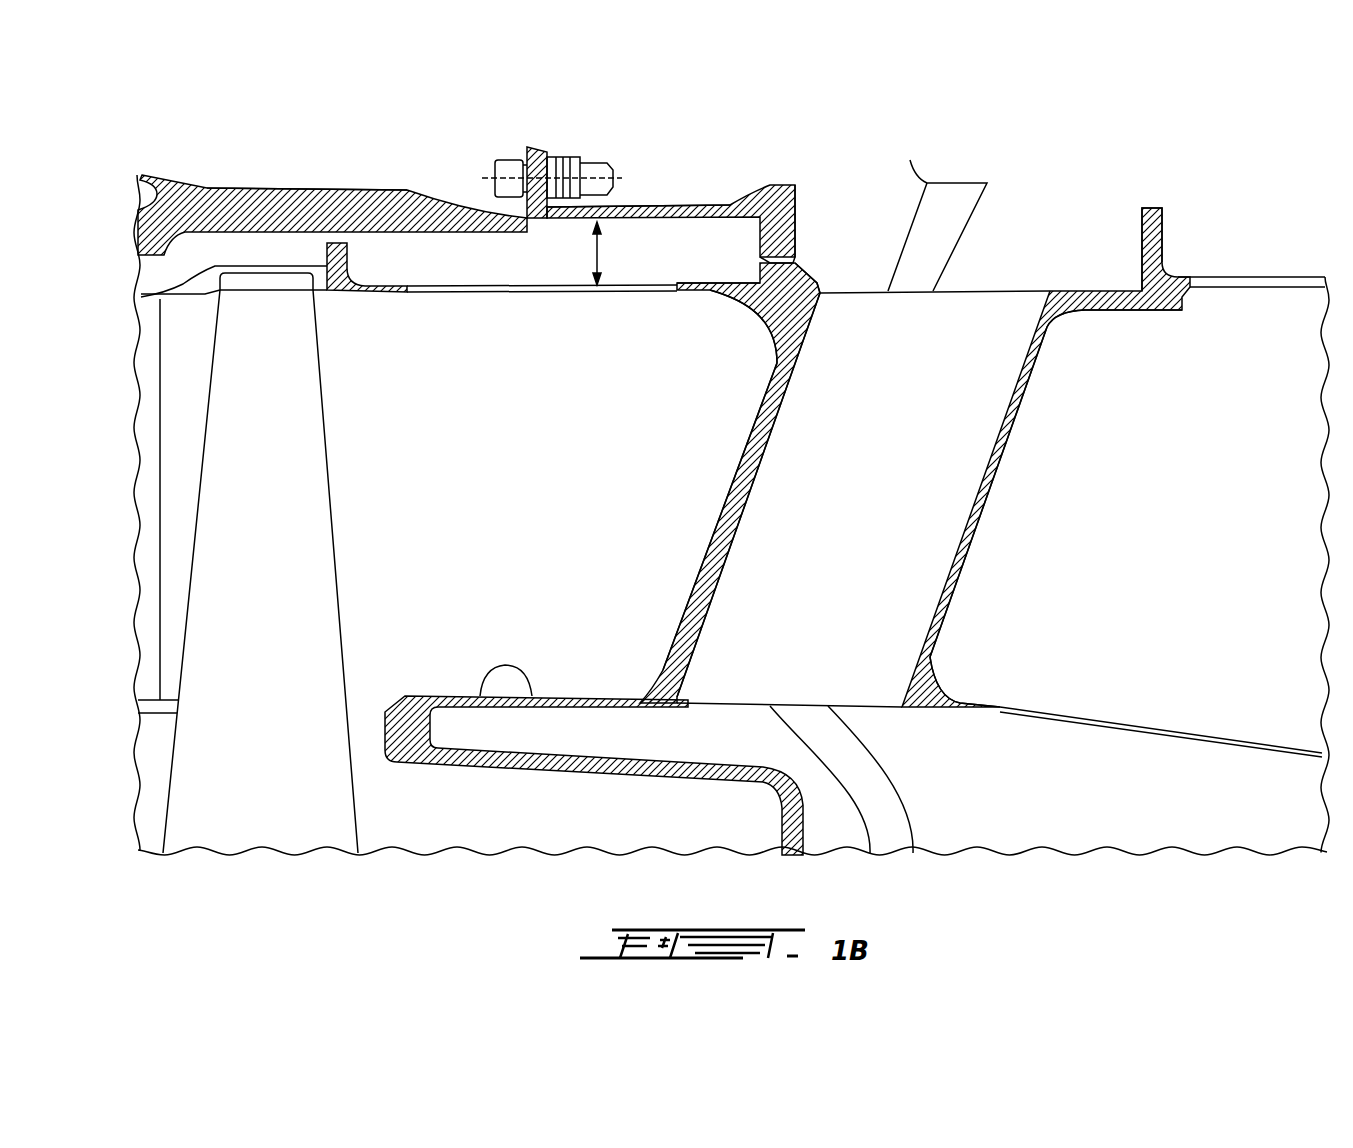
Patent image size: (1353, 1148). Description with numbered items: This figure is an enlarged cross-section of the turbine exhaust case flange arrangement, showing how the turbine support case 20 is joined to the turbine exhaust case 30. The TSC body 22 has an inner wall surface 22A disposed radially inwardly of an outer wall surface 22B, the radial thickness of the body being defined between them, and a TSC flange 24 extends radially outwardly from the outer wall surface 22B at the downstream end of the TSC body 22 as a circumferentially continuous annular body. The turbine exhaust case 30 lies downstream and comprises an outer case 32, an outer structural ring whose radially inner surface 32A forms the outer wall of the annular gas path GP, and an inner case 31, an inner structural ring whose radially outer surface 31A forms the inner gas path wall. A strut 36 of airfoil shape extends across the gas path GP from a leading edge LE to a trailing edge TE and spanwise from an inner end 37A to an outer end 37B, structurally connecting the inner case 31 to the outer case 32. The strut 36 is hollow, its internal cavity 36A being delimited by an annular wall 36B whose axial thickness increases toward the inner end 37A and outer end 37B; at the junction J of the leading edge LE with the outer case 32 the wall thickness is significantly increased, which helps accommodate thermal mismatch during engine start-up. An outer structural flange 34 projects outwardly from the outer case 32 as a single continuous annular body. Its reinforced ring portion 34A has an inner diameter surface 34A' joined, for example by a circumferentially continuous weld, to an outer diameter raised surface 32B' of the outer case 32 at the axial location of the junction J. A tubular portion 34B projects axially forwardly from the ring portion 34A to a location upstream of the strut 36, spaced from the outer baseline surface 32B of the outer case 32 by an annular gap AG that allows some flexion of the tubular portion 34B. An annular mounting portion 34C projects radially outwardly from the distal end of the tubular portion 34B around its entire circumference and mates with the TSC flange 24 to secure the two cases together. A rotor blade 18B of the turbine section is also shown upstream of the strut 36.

The rotor blade 18B is at (260, 490).
The turbine support case (TSC) 20 is at (332, 153).
The TSC body 22 is at (263, 210).
The inner wall surface 22A is at (403, 232).
The outer wall surface 22B is at (357, 190).
The TSC flange 24 is at (524, 153).
The turbine exhaust case (TEC) 30 is at (1130, 326).
The inner case 31 is at (565, 697).
The radially outer surface 31A is at (483, 697).
The outer case 32 is at (1095, 291).
The radially inner surface 32A is at (1105, 312).
The outer baseline surface 32B is at (1098, 216).
The outer diameter raised surface 32B' is at (703, 260).
The outer structural flange 34 is at (693, 161).
The ring portion 34A is at (827, 168).
The inner diameter surface 34A' is at (847, 264).
The tubular portion 34B is at (632, 205).
The annular mounting portion 34C is at (543, 150).
The strut 36 is at (975, 553).
The internal cavity 36A is at (833, 511).
The annular wall 36B is at (717, 593).
The inner end 37A is at (947, 692).
The outer end 37B is at (1058, 322).
The junction J is at (755, 325).
The leading edge LE is at (718, 535).
The trailing edge TE is at (990, 493).
The annular gas path GP is at (488, 580).
The annular gap AG is at (576, 253).